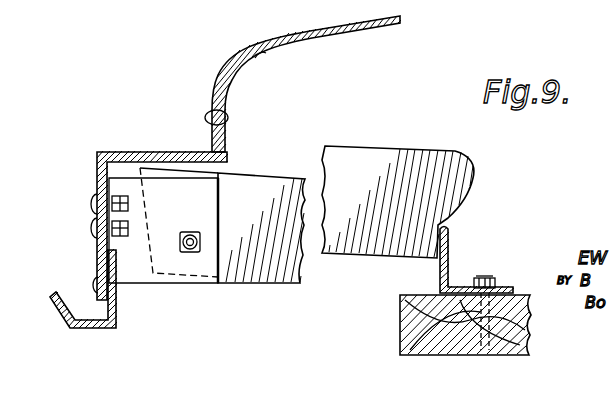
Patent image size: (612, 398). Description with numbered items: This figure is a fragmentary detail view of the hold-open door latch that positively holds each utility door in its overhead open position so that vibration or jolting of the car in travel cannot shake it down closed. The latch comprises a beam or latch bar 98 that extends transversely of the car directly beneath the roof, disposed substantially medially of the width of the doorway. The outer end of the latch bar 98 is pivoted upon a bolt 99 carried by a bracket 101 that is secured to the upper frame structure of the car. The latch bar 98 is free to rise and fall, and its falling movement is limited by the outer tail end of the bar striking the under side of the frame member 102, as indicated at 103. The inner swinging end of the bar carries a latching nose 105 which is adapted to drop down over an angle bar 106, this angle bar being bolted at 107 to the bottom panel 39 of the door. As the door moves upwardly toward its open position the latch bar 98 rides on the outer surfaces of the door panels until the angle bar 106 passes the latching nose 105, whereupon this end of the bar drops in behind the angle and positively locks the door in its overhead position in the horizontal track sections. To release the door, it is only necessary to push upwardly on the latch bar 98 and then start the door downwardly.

The bottom panel 39 is at (400, 325).
The latch bar 98 is at (270, 283).
The bolt 99 is at (191, 252).
The bracket 101 is at (140, 283).
The frame member 102 is at (120, 152).
The point of contact 103 is at (146, 170).
The latching nose 105 is at (447, 206).
The angle bar 106 is at (450, 248).
The bolt 107 is at (490, 276).